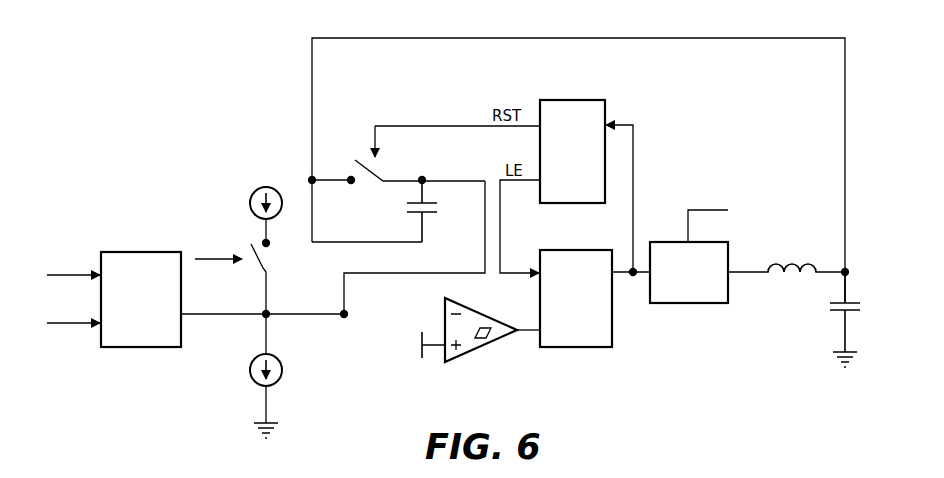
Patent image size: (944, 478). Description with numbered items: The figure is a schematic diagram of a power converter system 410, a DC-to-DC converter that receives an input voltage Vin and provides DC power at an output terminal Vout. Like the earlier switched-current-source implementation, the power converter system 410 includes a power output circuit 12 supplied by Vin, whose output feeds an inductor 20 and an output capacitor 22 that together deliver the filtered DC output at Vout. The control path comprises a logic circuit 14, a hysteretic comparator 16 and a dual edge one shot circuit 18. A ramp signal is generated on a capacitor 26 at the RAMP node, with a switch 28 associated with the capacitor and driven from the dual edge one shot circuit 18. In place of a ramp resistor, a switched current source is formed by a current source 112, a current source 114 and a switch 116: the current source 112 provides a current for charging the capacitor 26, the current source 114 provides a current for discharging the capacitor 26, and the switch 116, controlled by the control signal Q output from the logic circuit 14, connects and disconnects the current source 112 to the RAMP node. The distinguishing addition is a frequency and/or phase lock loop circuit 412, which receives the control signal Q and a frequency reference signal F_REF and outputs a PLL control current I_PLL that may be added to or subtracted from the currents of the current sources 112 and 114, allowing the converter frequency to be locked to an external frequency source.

The power converter system 410 is at (215, 46).
The phase lock loop circuit 412 is at (160, 252).
The current source 112 is at (262, 187).
The current source 114 is at (280, 374).
The switch 116 is at (260, 262).
The dual edge one shot circuit 18 is at (580, 100).
The switch 28 is at (380, 160).
The capacitor 26 is at (428, 215).
The hysteretic comparator 16 is at (470, 357).
The logic circuit 14 is at (575, 347).
The power output circuit 12 is at (668, 303).
The inductor 20 is at (773, 255).
The output capacitor 22 is at (840, 315).